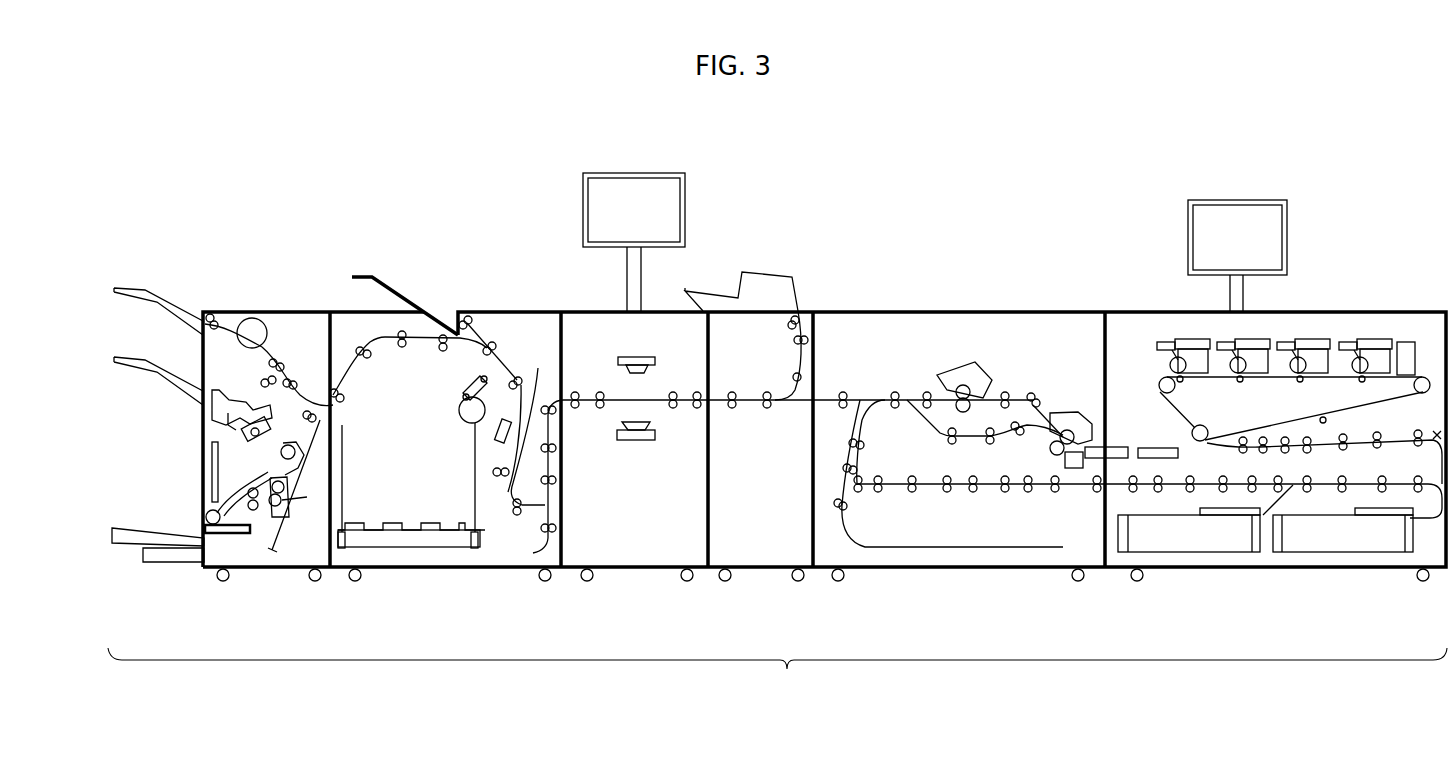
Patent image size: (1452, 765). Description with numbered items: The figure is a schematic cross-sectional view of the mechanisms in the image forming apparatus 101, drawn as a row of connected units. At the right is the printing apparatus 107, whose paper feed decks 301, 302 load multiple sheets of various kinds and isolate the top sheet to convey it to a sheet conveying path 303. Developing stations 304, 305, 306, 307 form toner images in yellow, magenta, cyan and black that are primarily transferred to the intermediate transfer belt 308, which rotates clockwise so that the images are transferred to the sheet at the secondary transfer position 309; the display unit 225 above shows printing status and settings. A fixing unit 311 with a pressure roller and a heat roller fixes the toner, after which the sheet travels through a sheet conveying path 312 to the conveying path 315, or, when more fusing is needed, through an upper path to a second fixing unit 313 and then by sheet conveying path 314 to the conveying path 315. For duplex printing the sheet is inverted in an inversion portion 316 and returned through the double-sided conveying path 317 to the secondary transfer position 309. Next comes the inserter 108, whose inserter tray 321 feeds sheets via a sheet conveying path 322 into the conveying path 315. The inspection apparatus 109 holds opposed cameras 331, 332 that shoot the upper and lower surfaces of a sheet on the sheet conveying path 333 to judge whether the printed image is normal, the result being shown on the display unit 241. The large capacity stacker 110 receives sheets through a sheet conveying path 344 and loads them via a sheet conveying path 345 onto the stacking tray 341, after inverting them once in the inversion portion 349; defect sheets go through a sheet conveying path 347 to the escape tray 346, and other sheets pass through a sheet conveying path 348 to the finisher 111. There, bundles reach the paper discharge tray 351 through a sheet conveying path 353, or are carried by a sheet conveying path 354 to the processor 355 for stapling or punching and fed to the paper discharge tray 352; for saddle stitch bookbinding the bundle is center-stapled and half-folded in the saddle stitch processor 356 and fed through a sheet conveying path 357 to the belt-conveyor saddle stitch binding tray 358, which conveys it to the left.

The image forming apparatus 101 is at (777, 678).
The printing apparatus 107 is at (918, 572).
The inserter 108 is at (753, 572).
The inspection apparatus 109 is at (623, 572).
The large capacity stacker 110 is at (488, 572).
The finisher 111 is at (285, 572).
The display unit 225 is at (1230, 218).
The display unit 241 is at (620, 187).
The paper feed deck 301 is at (1203, 553).
The paper feed deck 302 is at (1343, 553).
The sheet conveying path 303 is at (1435, 436).
The developing station 304 is at (1372, 338).
The developing station 305 is at (1320, 338).
The developing station 306 is at (1253, 338).
The developing station 307 is at (1188, 338).
The intermediate transfer belt 308 is at (1272, 424).
The secondary transfer position 309 is at (1191, 432).
The fixing unit 311 is at (1067, 412).
The sheet conveying path 312 is at (925, 426).
The second fixing unit 313 is at (953, 366).
The sheet conveying path 314 is at (917, 397).
The conveying path 315 is at (823, 397).
The inversion portion 316 is at (883, 545).
The double-sided conveying path 317 is at (1073, 489).
The inserter tray 321 is at (688, 290).
The sheet conveying path 322 is at (797, 362).
The camera 331 is at (632, 357).
The camera 332 is at (637, 442).
The sheet conveying path 333 is at (610, 398).
The stacking tray 341 is at (367, 523).
The sheet conveying path 344 is at (525, 425).
The sheet conveying path 345 is at (505, 382).
The escape tray 346 is at (400, 300).
The sheet conveying path 347 is at (470, 330).
The sheet conveying path 348 is at (381, 338).
The inversion portion 349 is at (550, 550).
The paper discharge tray 351 is at (142, 291).
The paper discharge tray 352 is at (124, 360).
The sheet conveying path 353 is at (232, 323).
The sheet conveying path 354 is at (258, 374).
The processor 355 is at (217, 418).
The saddle stitch processor 356 is at (295, 505).
The sheet conveying path 357 is at (223, 533).
The saddle stitch binding tray 358 is at (133, 528).